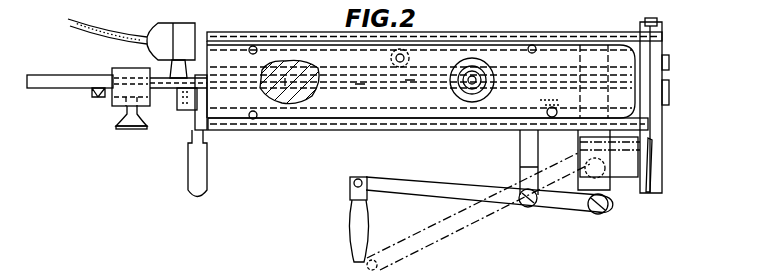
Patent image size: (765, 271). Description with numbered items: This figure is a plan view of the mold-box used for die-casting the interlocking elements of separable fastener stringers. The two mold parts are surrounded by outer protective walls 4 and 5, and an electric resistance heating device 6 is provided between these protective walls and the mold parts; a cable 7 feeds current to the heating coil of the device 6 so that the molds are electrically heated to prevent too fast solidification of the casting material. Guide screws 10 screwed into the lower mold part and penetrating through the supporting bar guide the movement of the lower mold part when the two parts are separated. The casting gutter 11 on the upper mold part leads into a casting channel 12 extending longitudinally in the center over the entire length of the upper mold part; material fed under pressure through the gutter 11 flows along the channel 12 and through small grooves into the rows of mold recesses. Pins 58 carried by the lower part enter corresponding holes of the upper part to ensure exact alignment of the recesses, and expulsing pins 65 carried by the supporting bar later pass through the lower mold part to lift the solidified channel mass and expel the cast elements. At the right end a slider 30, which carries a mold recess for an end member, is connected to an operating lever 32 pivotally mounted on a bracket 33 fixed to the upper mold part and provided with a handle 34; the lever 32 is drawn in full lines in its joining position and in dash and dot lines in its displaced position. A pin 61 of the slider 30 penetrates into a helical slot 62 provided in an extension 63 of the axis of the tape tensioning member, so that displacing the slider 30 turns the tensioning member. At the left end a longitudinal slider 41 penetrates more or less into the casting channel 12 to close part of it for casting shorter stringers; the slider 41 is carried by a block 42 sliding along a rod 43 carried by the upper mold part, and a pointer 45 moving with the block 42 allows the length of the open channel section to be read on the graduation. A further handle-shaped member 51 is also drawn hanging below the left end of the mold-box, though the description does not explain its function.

The outer protective wall 4 is at (275, 32).
The outer protective wall 5 is at (263, 130).
The electric resistance heating device 6 is at (636, 44).
The cable 7 is at (100, 40).
The guide screw 10 is at (406, 58).
The casting gutter 11 is at (458, 93).
The casting channel 12 is at (318, 76).
The slider 30 is at (583, 153).
The operating lever 32 is at (441, 186).
The bracket 33 is at (519, 153).
The handle 34 is at (351, 186).
The slider 41 is at (280, 84).
The block 42 is at (114, 106).
The rod 43 is at (52, 80).
The pointer 45 is at (97, 97).
The handle 51 is at (190, 160).
The pin 58 is at (535, 47).
The pin 61 is at (647, 188).
The helical slot 62 is at (605, 168).
The extension 63 is at (655, 195).
The expulsing pin 65 is at (412, 80).